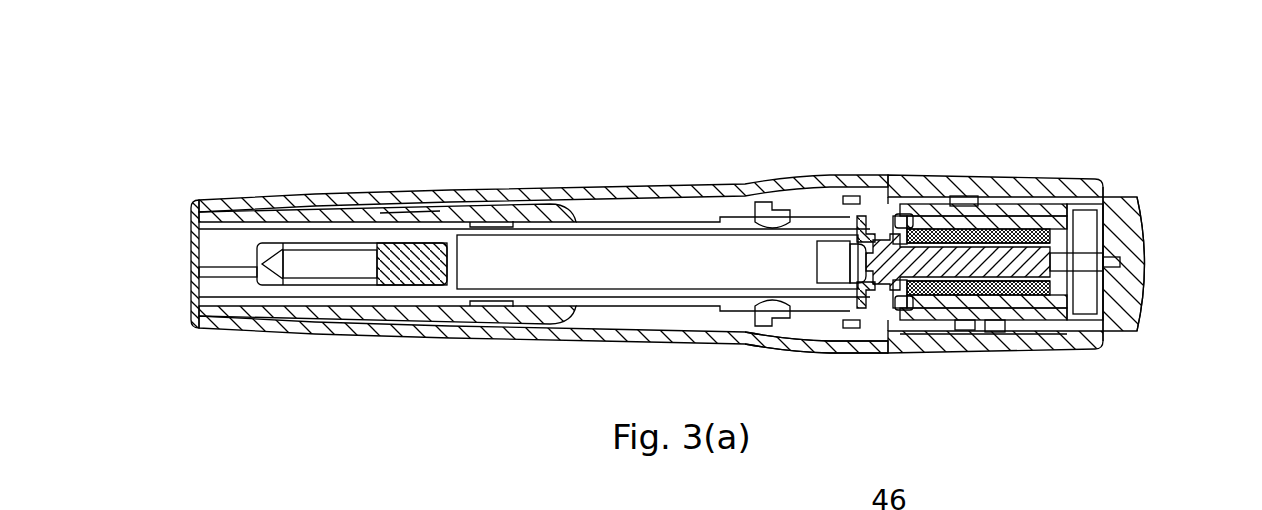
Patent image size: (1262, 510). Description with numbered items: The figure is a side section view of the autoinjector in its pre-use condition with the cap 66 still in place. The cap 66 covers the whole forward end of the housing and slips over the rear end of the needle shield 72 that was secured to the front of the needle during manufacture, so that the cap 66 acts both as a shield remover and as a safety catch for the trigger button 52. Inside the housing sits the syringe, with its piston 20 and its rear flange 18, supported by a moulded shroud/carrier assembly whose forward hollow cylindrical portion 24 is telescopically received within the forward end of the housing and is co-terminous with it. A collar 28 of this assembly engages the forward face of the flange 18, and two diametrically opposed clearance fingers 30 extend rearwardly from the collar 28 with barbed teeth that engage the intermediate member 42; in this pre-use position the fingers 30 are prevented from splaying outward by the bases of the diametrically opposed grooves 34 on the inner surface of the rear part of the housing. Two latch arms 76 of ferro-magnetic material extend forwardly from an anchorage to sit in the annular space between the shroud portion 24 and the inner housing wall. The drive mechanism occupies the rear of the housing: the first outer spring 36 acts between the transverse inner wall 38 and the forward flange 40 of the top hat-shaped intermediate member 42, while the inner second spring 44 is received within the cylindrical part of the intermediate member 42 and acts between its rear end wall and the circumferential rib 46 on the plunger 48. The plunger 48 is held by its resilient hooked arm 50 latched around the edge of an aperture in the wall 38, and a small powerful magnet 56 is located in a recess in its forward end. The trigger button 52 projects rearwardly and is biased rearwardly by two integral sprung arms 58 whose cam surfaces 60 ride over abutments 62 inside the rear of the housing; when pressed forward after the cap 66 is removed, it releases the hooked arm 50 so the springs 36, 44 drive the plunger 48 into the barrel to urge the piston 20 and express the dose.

The flange 18 is at (838, 334).
The piston 20 is at (825, 250).
The forward hollow cylindrical portion 24 is at (445, 316).
The collar 28 is at (845, 200).
The clearance fingers 30 is at (898, 218).
The grooves 34 is at (740, 210).
The first outer spring 36 is at (1013, 230).
The transverse inner wall 38 is at (1080, 318).
The forward flange 40 is at (905, 228).
The intermediate member 42 is at (1030, 233).
The inner second spring 44 is at (972, 262).
The circumferential rib 46 is at (862, 226).
The plunger 48 is at (960, 240).
The resilient hooked arm 50 is at (1138, 328).
The trigger button 52 is at (1125, 272).
The magnet 56 is at (852, 268).
The sprung arms 58 is at (1028, 334).
The cam surfaces 60 is at (992, 333).
The abutments 62 is at (968, 331).
The cap 66 is at (343, 333).
The needle shield 72 is at (303, 241).
The latch arms 76 is at (413, 214).